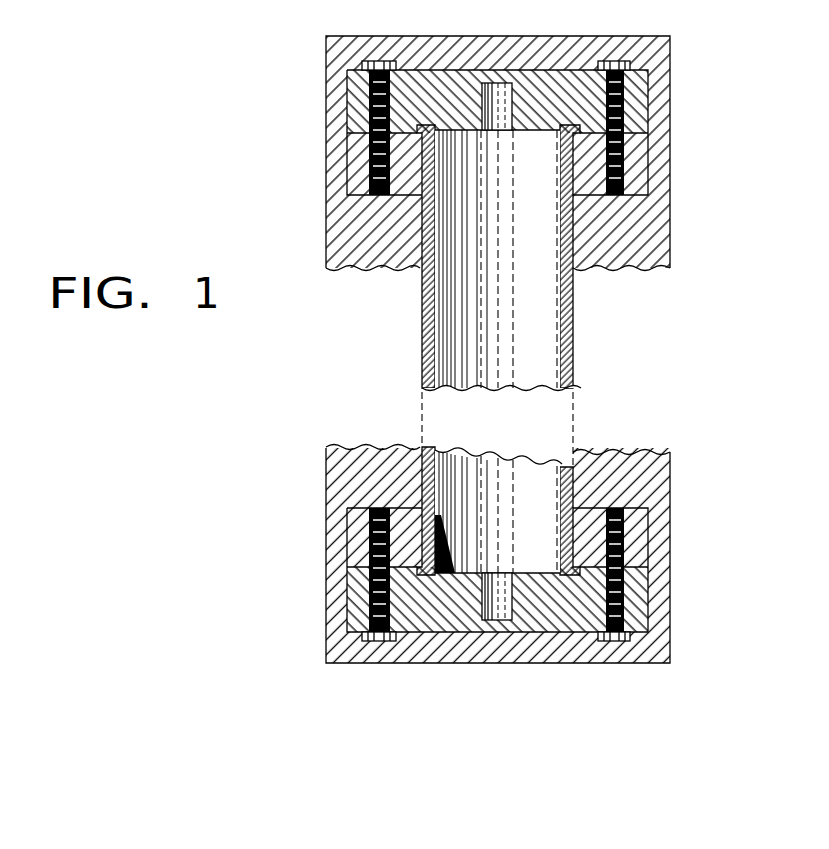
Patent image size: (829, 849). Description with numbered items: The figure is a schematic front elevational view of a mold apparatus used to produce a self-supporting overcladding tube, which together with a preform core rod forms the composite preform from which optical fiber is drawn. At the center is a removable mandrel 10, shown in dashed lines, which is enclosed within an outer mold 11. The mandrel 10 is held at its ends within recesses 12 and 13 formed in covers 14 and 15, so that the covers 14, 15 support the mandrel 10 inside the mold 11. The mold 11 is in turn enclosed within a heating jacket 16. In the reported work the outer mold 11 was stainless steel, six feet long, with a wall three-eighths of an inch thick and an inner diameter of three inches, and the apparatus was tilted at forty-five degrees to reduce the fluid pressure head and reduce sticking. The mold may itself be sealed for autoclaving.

The removable mandrel 10 is at (511, 372).
The outer mold 11 is at (575, 336).
The recess 12 is at (512, 84).
The recess 13 is at (505, 620).
The cover 14 is at (616, 64).
The cover 15 is at (643, 594).
The heating jacket 16 is at (652, 240).